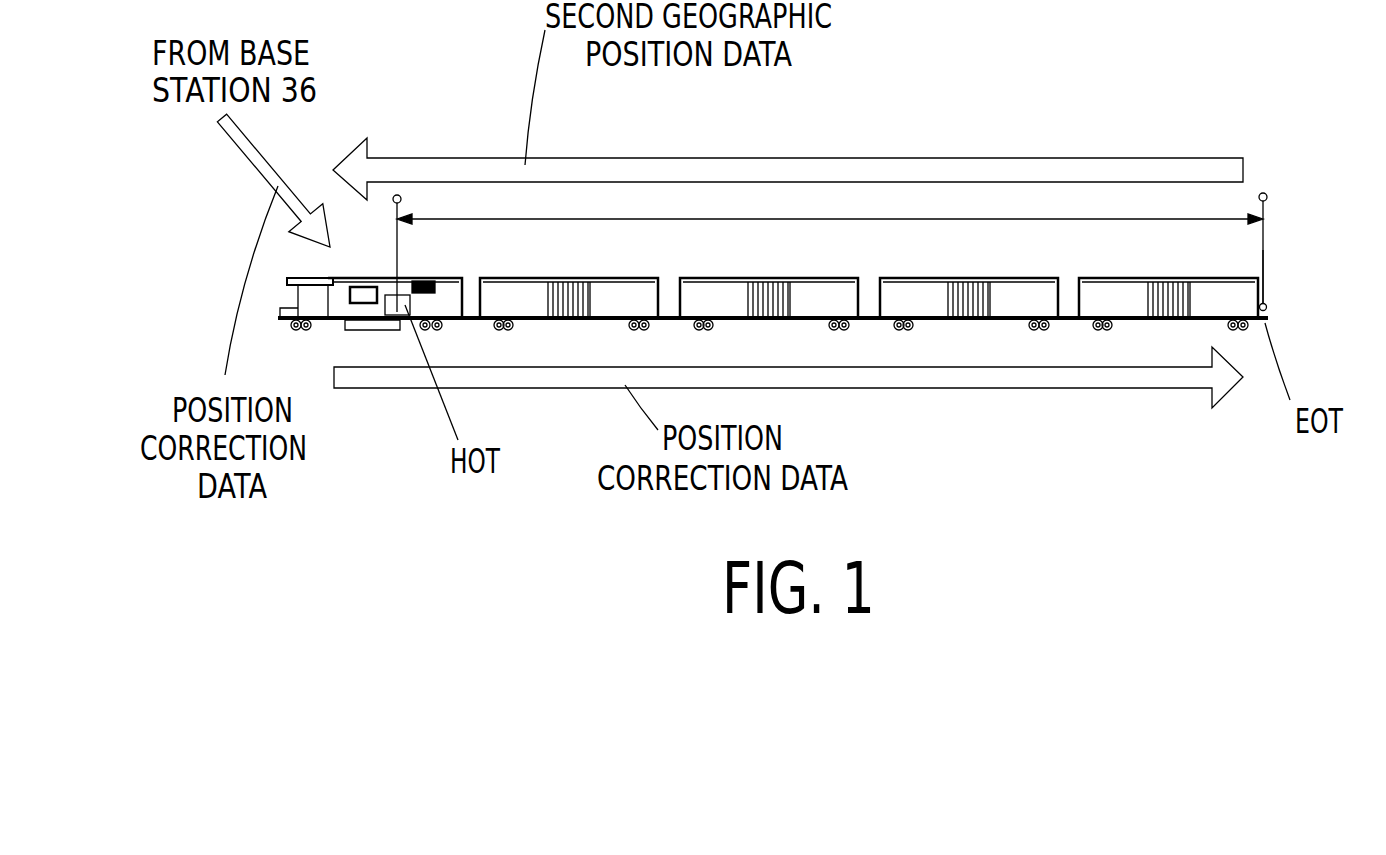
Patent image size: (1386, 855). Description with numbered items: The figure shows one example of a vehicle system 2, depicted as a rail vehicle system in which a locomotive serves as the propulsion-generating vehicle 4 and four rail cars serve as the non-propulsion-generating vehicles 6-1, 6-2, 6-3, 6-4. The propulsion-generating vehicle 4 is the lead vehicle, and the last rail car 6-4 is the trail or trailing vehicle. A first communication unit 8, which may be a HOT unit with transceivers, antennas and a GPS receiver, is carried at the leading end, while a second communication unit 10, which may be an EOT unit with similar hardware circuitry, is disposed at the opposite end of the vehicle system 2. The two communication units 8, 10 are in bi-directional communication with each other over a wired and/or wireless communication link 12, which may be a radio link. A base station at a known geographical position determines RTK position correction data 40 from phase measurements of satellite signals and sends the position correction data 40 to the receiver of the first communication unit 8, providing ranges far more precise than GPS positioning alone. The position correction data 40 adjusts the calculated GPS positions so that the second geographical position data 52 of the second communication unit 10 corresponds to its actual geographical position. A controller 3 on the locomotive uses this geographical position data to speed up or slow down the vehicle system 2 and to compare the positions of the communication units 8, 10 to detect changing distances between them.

The vehicle system 2 is at (222, 301).
The controller 3 is at (365, 303).
The propulsion-generating vehicle 4 is at (340, 312).
The non-propulsion-generating vehicle 6-1 is at (630, 300).
The non-propulsion-generating vehicle 6-2 is at (812, 300).
The non-propulsion-generating vehicle 6-3 is at (1020, 300).
The non-propulsion-generating vehicle 6-4 is at (1218, 298).
The first communication unit 8 is at (388, 318).
The second communication unit 10 is at (1268, 300).
The communication link 12 is at (940, 215).
The position correction data 40 is at (232, 144).
The second geographical position data 52 is at (462, 160).